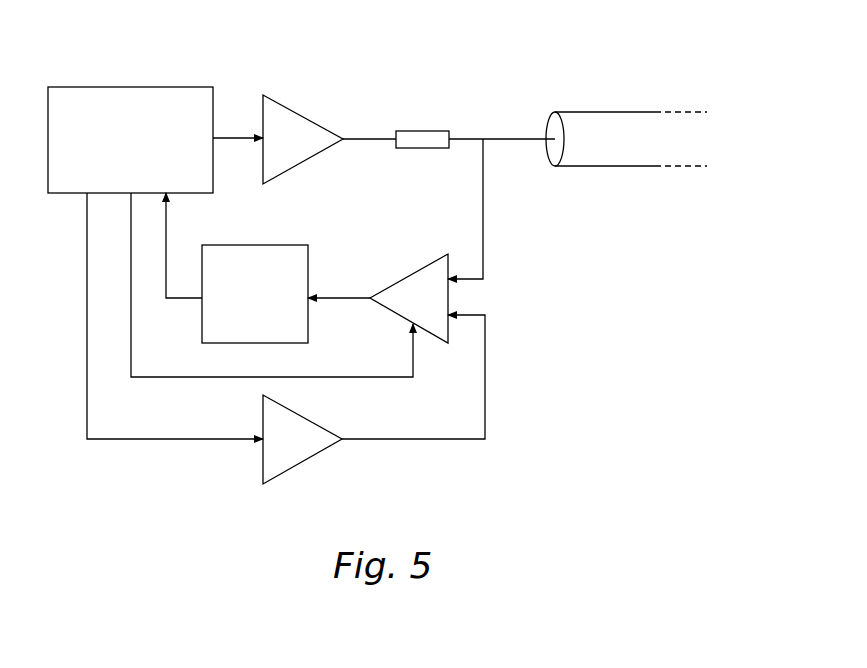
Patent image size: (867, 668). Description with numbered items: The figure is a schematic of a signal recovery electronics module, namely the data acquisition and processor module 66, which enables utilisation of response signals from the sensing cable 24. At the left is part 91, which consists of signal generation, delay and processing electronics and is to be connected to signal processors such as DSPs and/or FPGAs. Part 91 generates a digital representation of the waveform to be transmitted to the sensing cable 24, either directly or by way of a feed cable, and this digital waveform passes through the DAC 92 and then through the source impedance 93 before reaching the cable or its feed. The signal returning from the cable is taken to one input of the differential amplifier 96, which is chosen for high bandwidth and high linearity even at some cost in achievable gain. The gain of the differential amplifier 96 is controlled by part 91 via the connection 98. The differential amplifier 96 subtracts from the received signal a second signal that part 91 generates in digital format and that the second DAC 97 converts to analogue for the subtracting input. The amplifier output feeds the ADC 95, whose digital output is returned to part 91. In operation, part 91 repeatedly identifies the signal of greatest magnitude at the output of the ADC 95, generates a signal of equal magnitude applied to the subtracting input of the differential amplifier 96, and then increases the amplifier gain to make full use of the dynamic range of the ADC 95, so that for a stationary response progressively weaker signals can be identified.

The signal generation, delay and processing electronics 91 is at (157, 87).
The DAC 92 is at (292, 108).
The source impedance 93 is at (456, 131).
The sensing cable 24 is at (627, 112).
The ADC 95 is at (291, 245).
The differential amplifier 96 is at (393, 312).
The second DAC 97 is at (330, 429).
The connection 98 is at (291, 297).
The data acquisition and processor module 66 is at (587, 323).